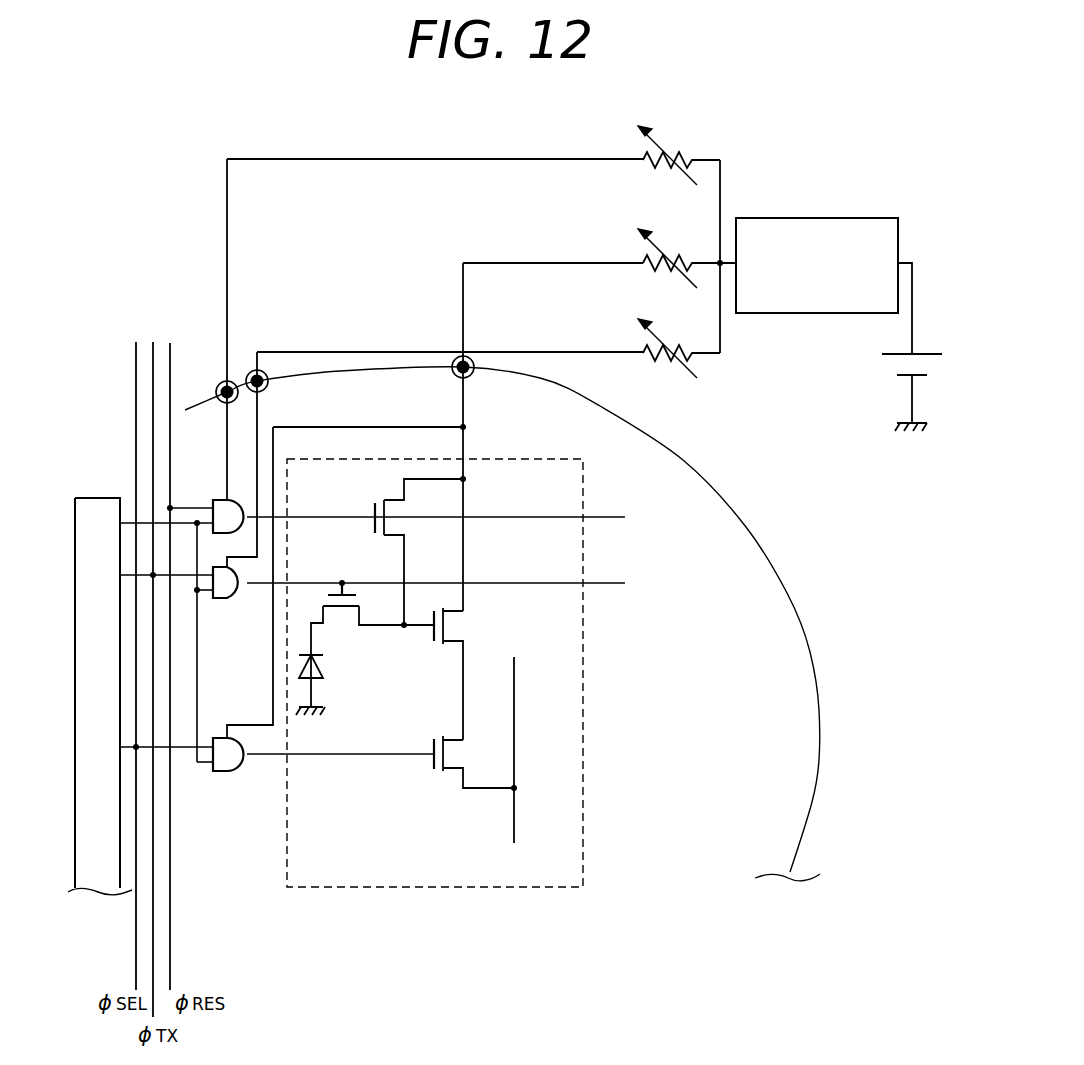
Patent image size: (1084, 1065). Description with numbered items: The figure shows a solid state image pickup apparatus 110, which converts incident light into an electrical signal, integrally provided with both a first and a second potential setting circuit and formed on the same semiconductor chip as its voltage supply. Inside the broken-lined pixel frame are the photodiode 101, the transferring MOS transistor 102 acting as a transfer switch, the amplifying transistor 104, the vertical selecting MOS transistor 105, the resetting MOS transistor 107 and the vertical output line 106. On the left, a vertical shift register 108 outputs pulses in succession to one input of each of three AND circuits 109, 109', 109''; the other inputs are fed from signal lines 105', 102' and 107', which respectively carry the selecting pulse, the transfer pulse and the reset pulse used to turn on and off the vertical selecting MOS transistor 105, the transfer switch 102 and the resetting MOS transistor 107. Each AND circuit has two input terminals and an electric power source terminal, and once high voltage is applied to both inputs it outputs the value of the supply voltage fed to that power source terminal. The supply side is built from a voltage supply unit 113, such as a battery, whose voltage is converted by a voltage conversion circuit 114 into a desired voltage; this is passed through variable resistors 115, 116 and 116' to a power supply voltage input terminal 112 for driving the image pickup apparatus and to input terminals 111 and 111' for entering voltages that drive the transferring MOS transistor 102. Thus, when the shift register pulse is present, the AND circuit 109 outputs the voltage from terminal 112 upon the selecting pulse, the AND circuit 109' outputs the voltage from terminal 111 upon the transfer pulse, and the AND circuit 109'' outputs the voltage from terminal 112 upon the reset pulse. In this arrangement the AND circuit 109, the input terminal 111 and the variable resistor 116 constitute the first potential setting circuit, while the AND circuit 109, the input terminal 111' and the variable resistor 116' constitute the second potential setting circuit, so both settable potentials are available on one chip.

The photodiode 101 is at (329, 669).
The transferring MOS transistor 102 is at (372, 628).
The signal line 102' is at (143, 654).
The amplifying transistor 104 is at (465, 623).
The vertical selecting MOS transistor 105 is at (465, 783).
The signal line 105' is at (107, 663).
The vertical output line 106 is at (516, 738).
The resetting MOS transistor 107 is at (384, 551).
The signal line 107' is at (193, 647).
The vertical shift register 108 is at (105, 892).
The AND circuit 109 is at (315, 786).
The AND circuit 109' is at (409, 611).
The AND circuit 109'' is at (397, 610).
The solid state image pickup apparatus 110 is at (820, 713).
The input terminal 111 is at (282, 459).
The input terminal 111' is at (249, 329).
The power supply voltage input terminal 112 is at (452, 372).
The voltage supply unit 113 is at (885, 364).
The voltage conversion circuit 114 is at (852, 218).
The variable resistor 115 is at (663, 330).
The variable resistor 116 is at (665, 136).
The variable resistor 116' is at (665, 240).